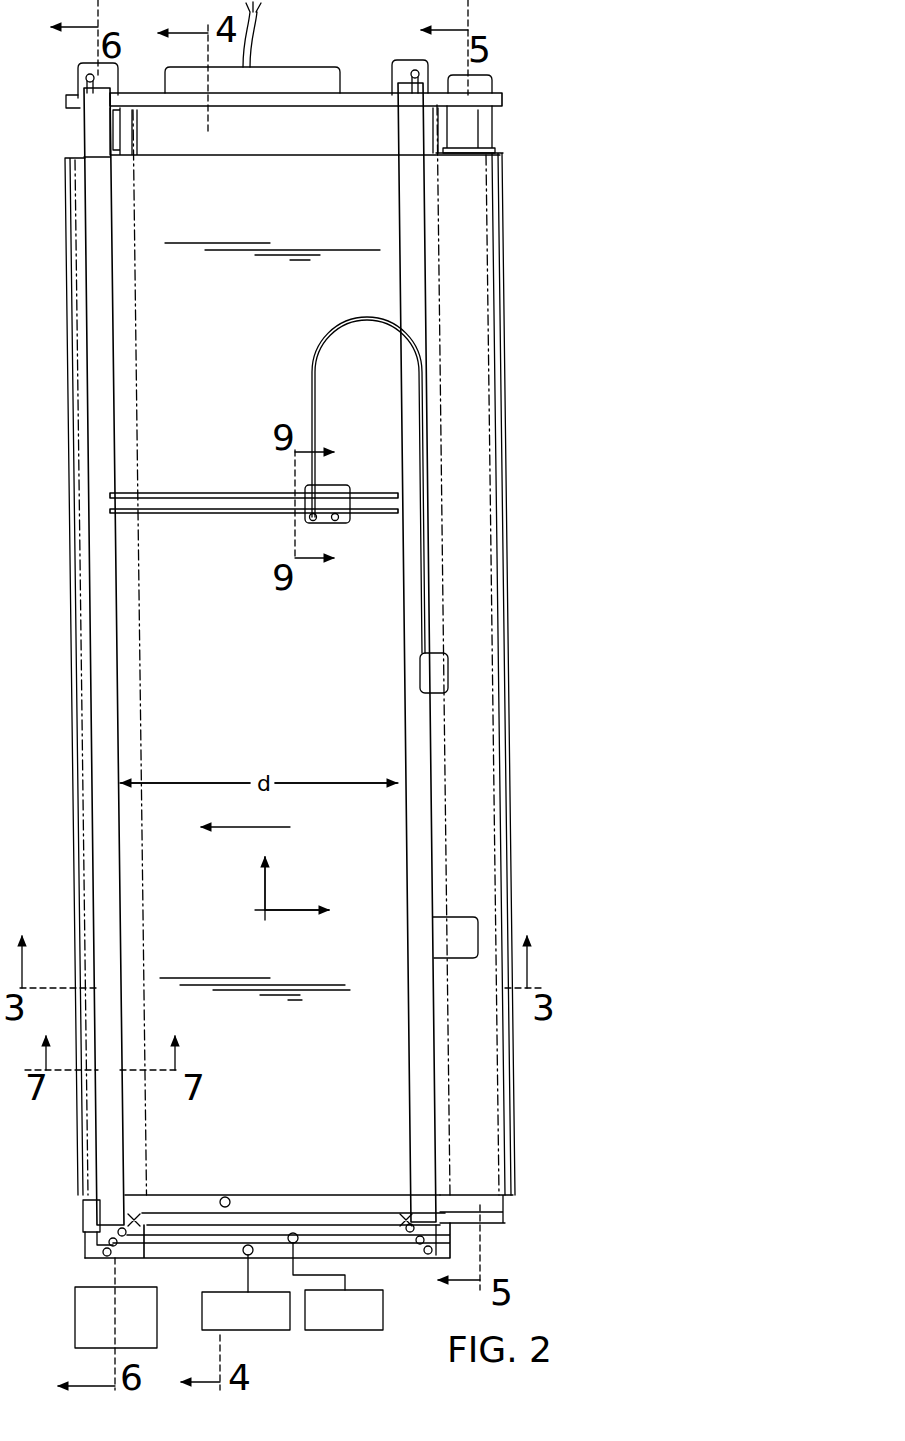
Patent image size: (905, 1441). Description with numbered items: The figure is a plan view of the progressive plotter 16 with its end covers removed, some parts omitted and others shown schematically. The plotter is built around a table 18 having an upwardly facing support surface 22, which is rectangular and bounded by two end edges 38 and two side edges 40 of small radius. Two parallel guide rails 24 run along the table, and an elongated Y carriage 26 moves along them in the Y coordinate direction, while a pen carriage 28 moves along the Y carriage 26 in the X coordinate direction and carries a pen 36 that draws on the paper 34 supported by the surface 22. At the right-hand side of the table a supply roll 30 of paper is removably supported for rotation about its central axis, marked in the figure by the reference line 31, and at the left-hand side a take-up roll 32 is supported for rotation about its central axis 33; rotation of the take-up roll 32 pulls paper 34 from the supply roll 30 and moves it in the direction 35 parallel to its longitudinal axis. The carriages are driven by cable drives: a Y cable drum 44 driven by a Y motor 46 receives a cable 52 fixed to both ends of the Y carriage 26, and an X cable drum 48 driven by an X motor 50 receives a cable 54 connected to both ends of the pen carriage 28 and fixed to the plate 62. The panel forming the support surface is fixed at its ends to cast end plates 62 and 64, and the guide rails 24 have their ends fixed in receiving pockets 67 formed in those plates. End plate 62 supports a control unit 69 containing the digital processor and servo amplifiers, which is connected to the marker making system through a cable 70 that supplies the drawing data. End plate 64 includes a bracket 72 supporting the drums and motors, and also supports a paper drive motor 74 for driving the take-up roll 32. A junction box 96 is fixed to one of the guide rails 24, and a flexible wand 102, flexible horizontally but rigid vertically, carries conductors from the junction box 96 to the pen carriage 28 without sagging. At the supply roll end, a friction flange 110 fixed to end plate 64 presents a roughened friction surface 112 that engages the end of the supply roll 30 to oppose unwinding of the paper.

The progressive plotter 16 is at (541, 267).
The table 18 is at (496, 92).
The support surface 22 is at (366, 125).
The guide rail 24 is at (95, 599).
The Y carriage 26 is at (206, 514).
The pen carriage 28 is at (313, 522).
The supply roll 30 is at (502, 566).
The reference axis 31 is at (468, 5).
The take-up roll 32 is at (70, 556).
The central axis 33 is at (98, 5).
The paper 34 is at (170, 175).
The direction 35 is at (288, 815).
The pen 36 is at (338, 521).
The end edge 38 is at (330, 150).
The side edge 40 is at (115, 200).
The Y cable drum 44 is at (293, 1233).
The Y motor 46 is at (383, 1320).
The X cable drum 48 is at (246, 1256).
The X motor 50 is at (265, 1332).
The cable 52 is at (370, 1247).
The cable 54 is at (97, 1237).
The end plate 62 is at (68, 97).
The end plate 64 is at (85, 1205).
The receiving pocket 67 is at (110, 78).
The control unit 69 is at (305, 70).
The cable 70 is at (250, 45).
The bracket 72 is at (187, 1260).
The paper drive motor 74 is at (75, 1300).
The junction box 96 is at (448, 672).
The flexible wand 102 is at (434, 540).
The friction flange 110 is at (515, 1198).
The friction surface 112 is at (510, 1190).